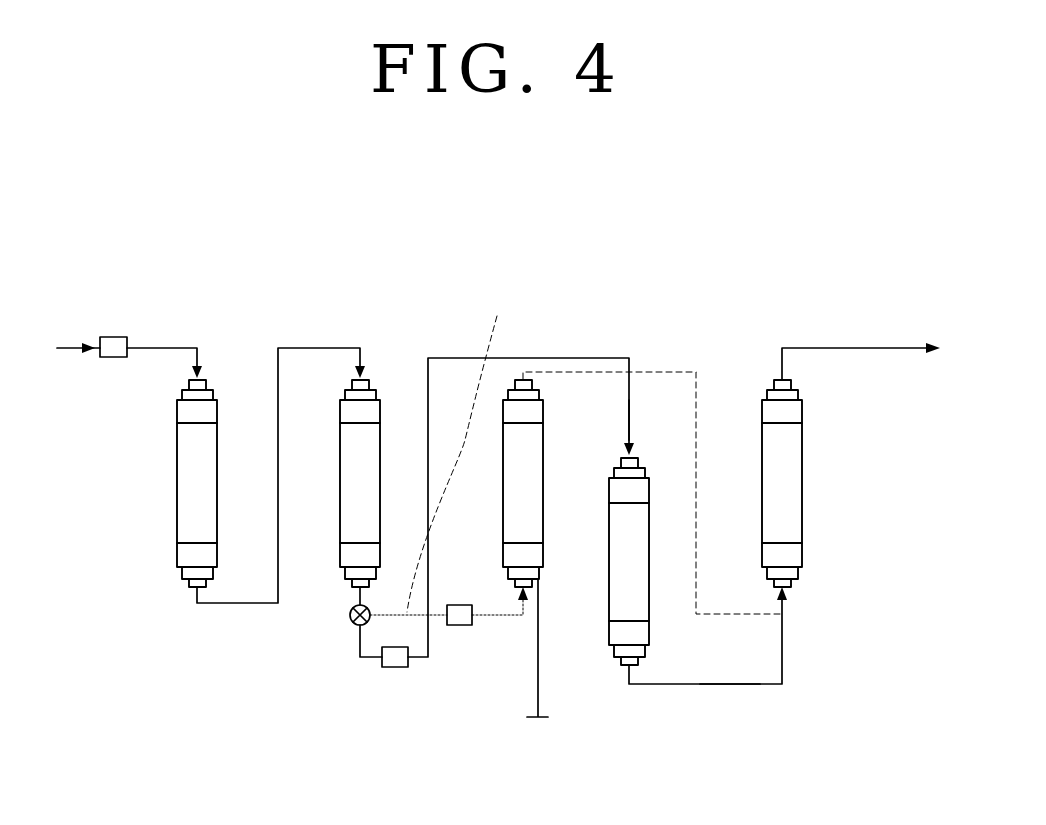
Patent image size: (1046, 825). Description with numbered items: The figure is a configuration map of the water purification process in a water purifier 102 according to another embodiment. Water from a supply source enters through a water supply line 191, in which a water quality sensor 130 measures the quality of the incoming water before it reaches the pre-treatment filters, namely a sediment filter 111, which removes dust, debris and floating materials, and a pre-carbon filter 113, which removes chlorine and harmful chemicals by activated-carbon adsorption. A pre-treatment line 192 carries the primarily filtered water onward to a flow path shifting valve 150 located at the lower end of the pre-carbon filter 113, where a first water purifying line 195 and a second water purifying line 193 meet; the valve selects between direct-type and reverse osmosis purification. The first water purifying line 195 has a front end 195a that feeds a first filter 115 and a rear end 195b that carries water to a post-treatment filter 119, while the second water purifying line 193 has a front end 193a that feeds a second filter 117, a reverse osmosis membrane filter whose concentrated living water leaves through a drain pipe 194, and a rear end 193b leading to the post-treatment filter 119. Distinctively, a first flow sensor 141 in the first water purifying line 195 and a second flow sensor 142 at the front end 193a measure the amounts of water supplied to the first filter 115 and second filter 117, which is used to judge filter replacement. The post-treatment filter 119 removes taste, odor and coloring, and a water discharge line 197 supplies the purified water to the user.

The water purifier 102 is at (532, 176).
The sediment filter 111 is at (177, 488).
The pre-carbon filter 113 is at (340, 488).
The first filter 115 is at (650, 605).
The second filter 117 is at (503, 488).
The post-treatment filter 119 is at (762, 488).
The water quality sensor 130 is at (113, 357).
The first flow sensor 141 is at (395, 667).
The second flow sensor 142 is at (457, 625).
The flow path shifting valve 150 is at (350, 618).
The water supply line 191 is at (160, 348).
The pre-treatment line 192 is at (363, 590).
The second water purifying line 193 is at (560, 290).
The second water purifying line front end 193a is at (464, 450).
The second water purifying line rear end 193b is at (643, 371).
The drain pipe 194 is at (538, 700).
The first water purifying line 195 is at (640, 745).
The first water purifying line front end 195a is at (627, 403).
The first water purifying line rear end 195b is at (665, 684).
The water discharge line 197 is at (880, 348).